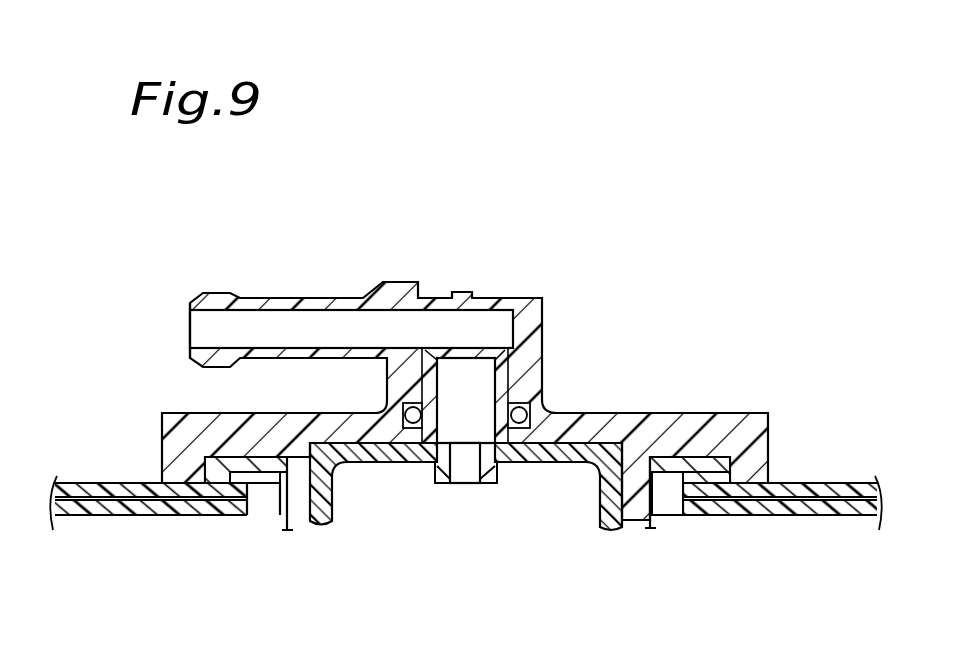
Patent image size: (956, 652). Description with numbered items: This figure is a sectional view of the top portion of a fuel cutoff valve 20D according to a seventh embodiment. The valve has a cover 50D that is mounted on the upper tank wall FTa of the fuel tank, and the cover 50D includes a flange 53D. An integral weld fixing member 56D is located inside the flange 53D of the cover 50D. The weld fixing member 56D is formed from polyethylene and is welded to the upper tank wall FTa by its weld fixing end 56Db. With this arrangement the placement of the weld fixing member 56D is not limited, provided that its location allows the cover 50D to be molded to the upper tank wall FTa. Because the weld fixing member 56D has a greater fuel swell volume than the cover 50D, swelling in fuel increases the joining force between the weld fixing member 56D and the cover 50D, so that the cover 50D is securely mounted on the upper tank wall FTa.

The fuel cutoff valve 20D is at (619, 233).
The cover 50D is at (602, 415).
The flange 53D is at (722, 432).
The upper tank wall FTa is at (833, 483).
The weld fixing member 56D is at (690, 470).
The weld fixing end 56Db is at (722, 473).